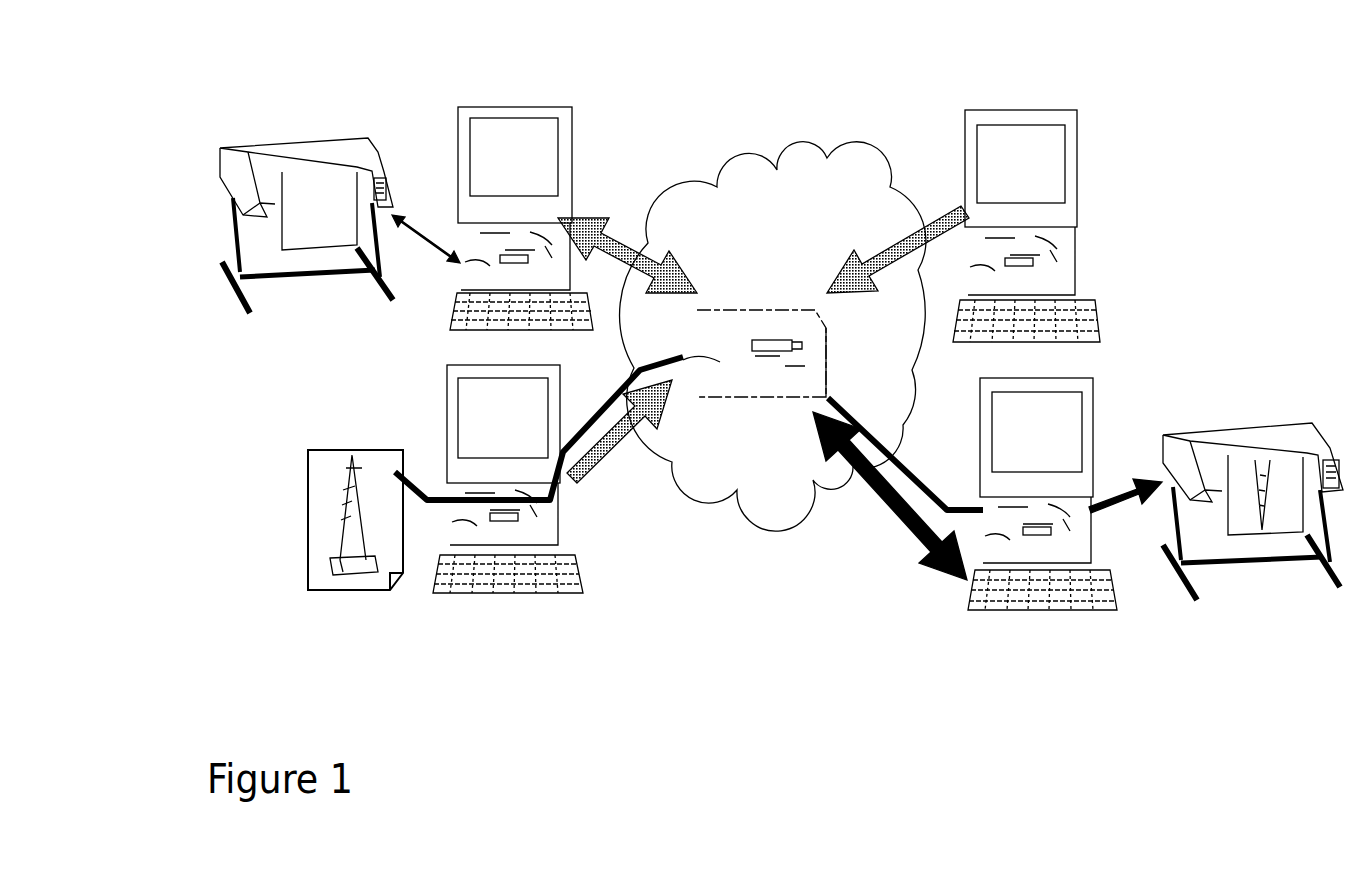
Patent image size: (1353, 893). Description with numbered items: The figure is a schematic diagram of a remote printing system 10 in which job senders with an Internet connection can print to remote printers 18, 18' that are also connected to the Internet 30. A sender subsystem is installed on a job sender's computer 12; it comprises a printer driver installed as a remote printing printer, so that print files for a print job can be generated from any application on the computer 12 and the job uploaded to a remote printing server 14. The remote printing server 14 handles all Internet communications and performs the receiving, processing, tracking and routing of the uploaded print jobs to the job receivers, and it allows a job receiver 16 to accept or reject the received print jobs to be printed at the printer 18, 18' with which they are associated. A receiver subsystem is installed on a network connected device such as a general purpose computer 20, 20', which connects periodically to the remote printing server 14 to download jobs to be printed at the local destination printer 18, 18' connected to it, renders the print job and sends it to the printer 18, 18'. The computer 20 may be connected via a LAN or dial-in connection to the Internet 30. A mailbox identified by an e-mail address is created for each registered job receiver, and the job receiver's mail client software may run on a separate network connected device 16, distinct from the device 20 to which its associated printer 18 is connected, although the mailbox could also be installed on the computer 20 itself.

The remote printing system 10 is at (141, 337).
The job sender's computer 12 is at (433, 433).
The remote printing server 14 is at (759, 414).
The job receiver's network connected device 16 is at (1094, 163).
The printer 18 is at (1253, 574).
The printer 18' is at (245, 183).
The general purpose computer 20 is at (1129, 448).
The general purpose computer 20' is at (513, 179).
The Internet 30 is at (804, 153).